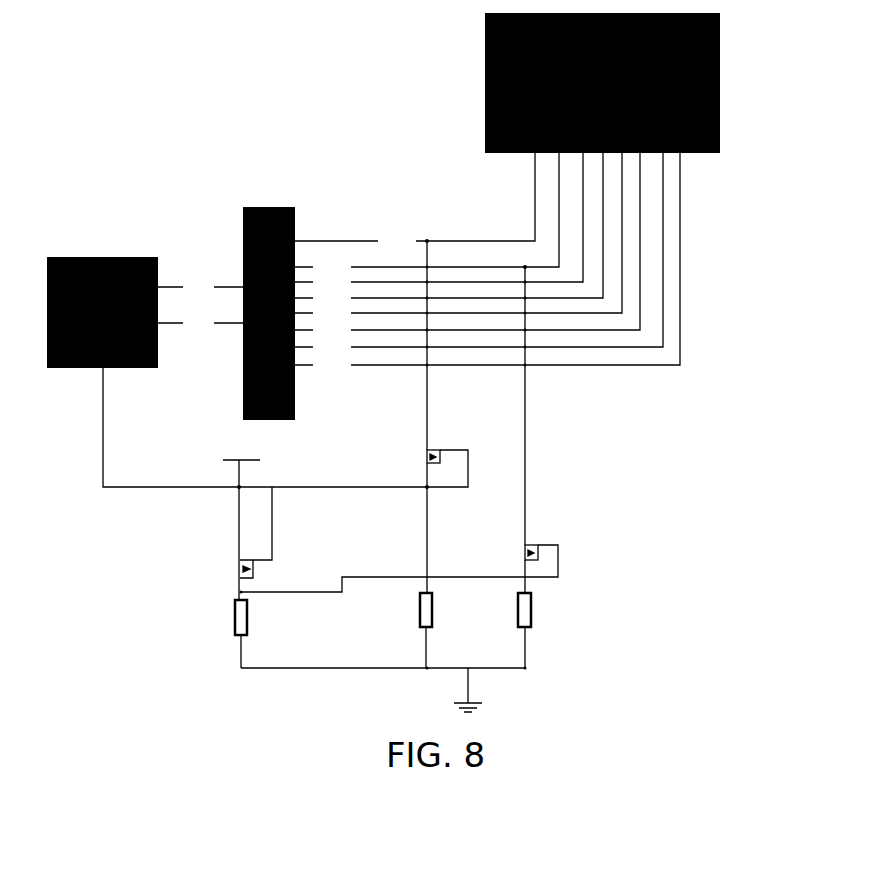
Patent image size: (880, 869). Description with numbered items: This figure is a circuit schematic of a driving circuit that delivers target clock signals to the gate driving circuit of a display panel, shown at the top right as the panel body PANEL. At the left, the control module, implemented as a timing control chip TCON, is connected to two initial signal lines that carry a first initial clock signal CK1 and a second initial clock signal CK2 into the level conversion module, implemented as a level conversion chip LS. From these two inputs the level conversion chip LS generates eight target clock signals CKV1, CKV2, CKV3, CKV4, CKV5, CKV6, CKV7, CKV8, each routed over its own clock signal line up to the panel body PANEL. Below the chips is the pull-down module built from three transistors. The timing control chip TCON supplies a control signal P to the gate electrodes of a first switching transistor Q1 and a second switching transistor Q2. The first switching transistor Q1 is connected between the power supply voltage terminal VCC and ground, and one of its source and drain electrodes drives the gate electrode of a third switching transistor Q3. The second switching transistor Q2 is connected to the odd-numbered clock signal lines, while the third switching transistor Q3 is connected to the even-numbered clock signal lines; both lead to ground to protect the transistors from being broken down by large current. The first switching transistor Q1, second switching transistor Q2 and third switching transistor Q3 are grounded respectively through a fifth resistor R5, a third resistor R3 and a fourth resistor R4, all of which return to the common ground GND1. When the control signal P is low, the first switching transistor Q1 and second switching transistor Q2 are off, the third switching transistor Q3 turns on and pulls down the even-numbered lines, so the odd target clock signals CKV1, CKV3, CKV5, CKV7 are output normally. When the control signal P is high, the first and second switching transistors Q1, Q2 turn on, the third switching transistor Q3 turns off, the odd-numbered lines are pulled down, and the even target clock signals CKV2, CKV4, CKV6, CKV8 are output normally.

The display panel PANEL is at (602, 83).
The timing controller TCON is at (102, 312).
The level shift circuit LS is at (269, 313).
The first initial clock signal CK1 is at (200, 287).
The second initial clock signal CK2 is at (200, 323).
The target clock signal CKV1 is at (415, 200).
The target clock signal CKV2 is at (427, 213).
The target clock signal CKV3 is at (439, 220).
The target clock signal CKV4 is at (449, 228).
The target clock signal CKV5 is at (458, 236).
The target clock signal CKV6 is at (467, 244).
The target clock signal CKV7 is at (479, 253).
The target clock signal CKV8 is at (487, 262).
The control signal P is at (257, 427).
The supply voltage VCC is at (241, 524).
The first switching transistor Q1 is at (382, 539).
The second switching transistor Q2 is at (427, 462).
The third switching transistor Q3 is at (522, 555).
The third resistor R3 is at (412, 630).
The fourth resistor R4 is at (510, 630).
The fifth resistor R5 is at (229, 634).
The ground GND1 is at (384, 690).